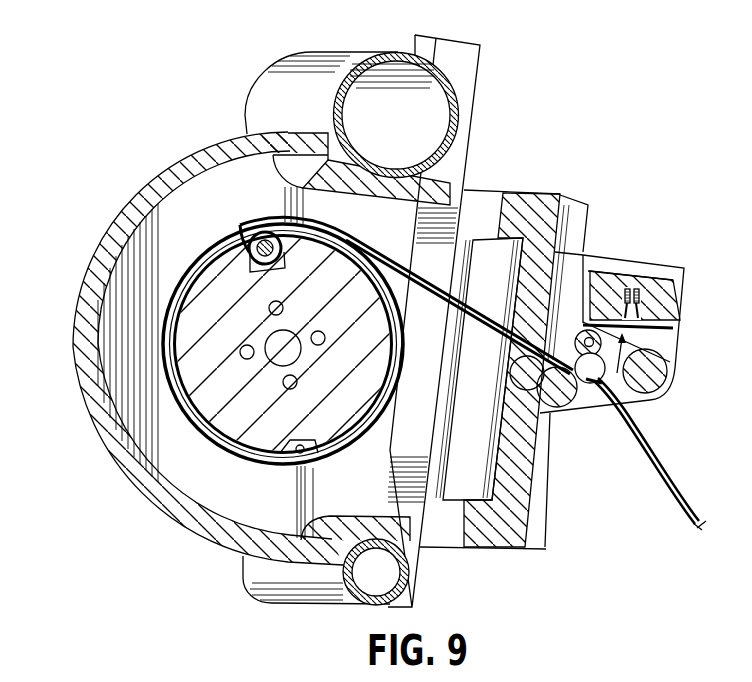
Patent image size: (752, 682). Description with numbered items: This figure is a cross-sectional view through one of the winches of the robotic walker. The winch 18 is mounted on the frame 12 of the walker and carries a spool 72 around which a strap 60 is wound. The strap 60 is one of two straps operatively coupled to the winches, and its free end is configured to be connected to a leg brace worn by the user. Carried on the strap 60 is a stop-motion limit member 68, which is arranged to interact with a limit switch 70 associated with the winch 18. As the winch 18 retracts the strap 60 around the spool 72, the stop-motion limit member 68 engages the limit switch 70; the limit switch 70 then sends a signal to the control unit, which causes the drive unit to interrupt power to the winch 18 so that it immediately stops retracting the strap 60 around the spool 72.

The frame 12 is at (281, 61).
The winch 18 is at (187, 157).
The spool 72 is at (205, 331).
The limit switch 70 is at (688, 322).
The stop-motion limit member 68 is at (592, 385).
The strap 60 is at (680, 502).